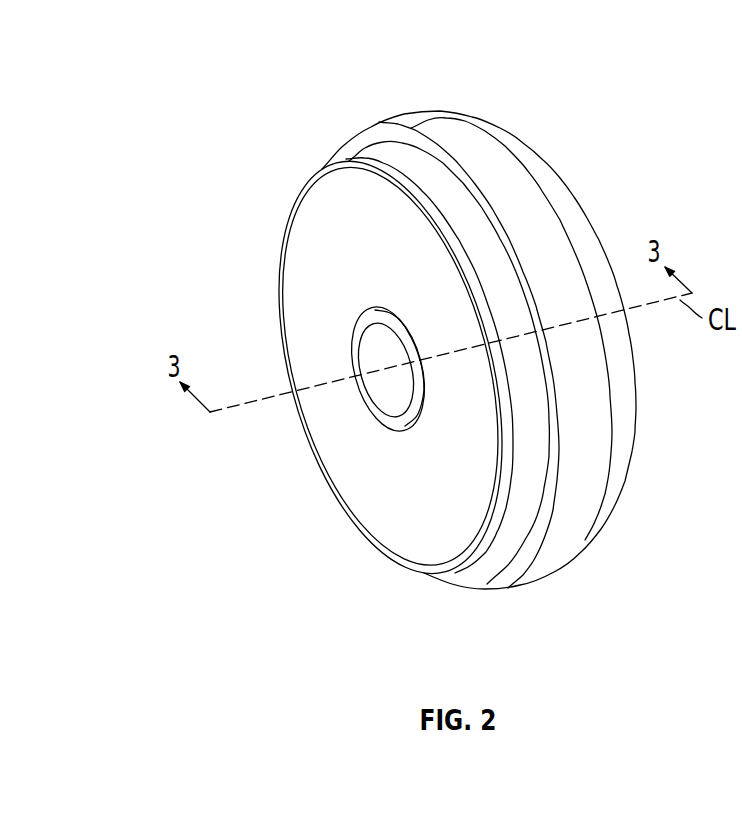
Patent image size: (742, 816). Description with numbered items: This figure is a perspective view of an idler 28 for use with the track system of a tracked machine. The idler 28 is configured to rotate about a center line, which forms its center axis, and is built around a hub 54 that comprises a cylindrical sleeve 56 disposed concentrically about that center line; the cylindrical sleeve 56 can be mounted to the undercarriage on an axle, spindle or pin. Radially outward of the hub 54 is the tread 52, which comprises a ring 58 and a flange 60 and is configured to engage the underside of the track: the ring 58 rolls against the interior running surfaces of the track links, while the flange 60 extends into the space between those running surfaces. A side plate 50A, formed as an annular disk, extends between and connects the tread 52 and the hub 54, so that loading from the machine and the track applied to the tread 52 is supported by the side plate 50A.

The idler 28 is at (465, 329).
The side plate 50A is at (420, 545).
The tread 52 is at (637, 390).
The hub 54 is at (393, 435).
The cylindrical sleeve 56 is at (379, 348).
The ring 58 is at (553, 178).
The flange 60 is at (449, 131).